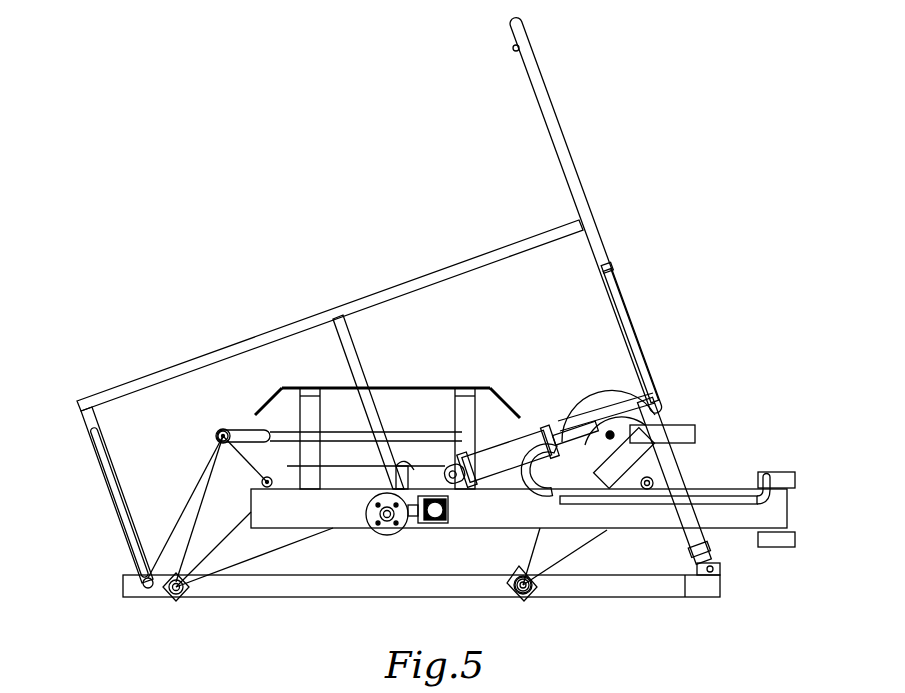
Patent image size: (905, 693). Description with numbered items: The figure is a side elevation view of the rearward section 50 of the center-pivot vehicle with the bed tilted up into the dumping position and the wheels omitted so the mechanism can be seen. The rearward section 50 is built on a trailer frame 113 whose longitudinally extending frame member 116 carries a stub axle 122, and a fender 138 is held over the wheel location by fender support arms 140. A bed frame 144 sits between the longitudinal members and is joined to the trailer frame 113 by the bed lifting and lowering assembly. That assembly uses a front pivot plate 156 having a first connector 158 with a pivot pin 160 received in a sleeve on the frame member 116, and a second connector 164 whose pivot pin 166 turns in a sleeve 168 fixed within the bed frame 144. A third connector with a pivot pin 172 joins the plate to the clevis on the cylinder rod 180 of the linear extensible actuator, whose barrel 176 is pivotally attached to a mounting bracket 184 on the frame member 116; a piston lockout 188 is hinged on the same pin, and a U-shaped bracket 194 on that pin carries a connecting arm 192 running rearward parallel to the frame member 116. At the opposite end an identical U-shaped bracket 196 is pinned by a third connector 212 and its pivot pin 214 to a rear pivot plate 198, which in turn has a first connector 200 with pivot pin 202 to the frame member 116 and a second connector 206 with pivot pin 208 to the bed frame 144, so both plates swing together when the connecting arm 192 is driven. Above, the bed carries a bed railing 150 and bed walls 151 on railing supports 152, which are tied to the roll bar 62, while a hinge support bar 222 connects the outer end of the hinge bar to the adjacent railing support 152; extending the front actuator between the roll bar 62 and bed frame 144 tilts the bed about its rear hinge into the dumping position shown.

The rearward section 50 is at (216, 292).
The roll bar 62 is at (516, 30).
The trailer frame 113 is at (798, 504).
The longitudinally extending frame member 116 is at (730, 490).
The axle 122 is at (405, 522).
The fender 138 is at (487, 392).
The fender support arm 140 is at (306, 392).
The bed frame 144 is at (262, 550).
The bed railing 150 is at (452, 266).
The bed wall 151 is at (544, 327).
The railing support 152 is at (346, 341).
The pivot plate 156 is at (572, 537).
The first connector 158 is at (548, 499).
The pivot pin 160 is at (640, 490).
The second connector 164 is at (516, 562).
The pivot pin 166 is at (530, 592).
The sleeve 168 is at (513, 576).
The pivot pin 172 is at (641, 401).
The barrel 176 is at (500, 476).
The cylinder rod 180 is at (537, 452).
The mounting bracket 184 is at (398, 468).
The piston lockout 188 is at (693, 428).
The connecting arm 192 is at (398, 435).
The U-shaped bracket 194 is at (612, 386).
The U-shaped bracket 196 is at (250, 430).
The pivot plate 198 is at (201, 503).
The first connector 200 is at (286, 469).
The pivot pin 202 is at (261, 481).
The second connector 206 is at (163, 597).
The pivot pin 208 is at (185, 595).
The third connector 212 is at (220, 430).
The pivot pin 214 is at (218, 436).
The hinge support bar 222 is at (82, 498).